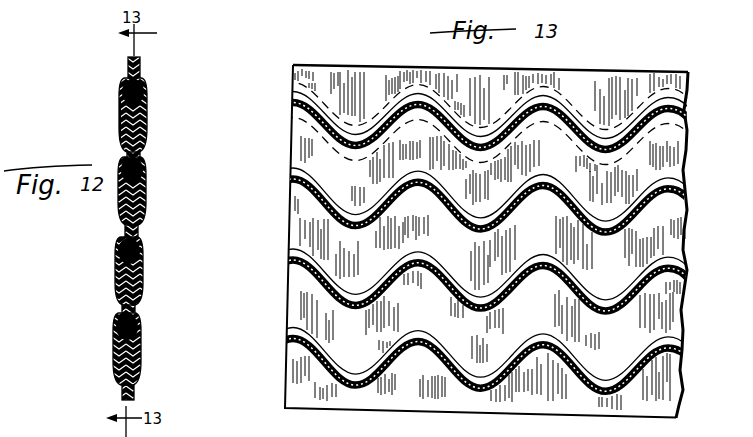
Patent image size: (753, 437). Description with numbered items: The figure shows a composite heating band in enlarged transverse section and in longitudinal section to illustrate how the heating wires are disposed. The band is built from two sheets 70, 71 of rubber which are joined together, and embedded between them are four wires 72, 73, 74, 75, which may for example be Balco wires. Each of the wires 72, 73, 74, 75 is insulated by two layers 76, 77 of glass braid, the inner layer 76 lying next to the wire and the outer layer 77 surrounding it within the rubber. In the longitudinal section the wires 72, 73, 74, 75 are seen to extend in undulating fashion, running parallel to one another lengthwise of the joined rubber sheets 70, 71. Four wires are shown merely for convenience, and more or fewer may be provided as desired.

In FIG. 12, the rubber sheet 70 is at (127, 67).
In FIG. 13, the rubber sheet 70 is at (374, 69).
In FIG. 12, the rubber sheet 71 is at (140, 70).
In FIG. 12, the wire 72 is at (147, 89).
In FIG. 13, the wire 72 is at (292, 98).
In FIG. 12, the wire 73 is at (146, 167).
In FIG. 13, the wire 73 is at (292, 174).
In FIG. 12, the wire 74 is at (143, 246).
In FIG. 13, the wire 74 is at (292, 252).
In FIG. 12, the wire 75 is at (141, 325).
In FIG. 13, the wire 75 is at (290, 329).
In FIG. 12, the layer of glass braid 76 is at (122, 86).
In FIG. 12, the layer of glass braid 77 is at (122, 99).
In FIG. 13, the layer of glass braid 77 is at (305, 115).